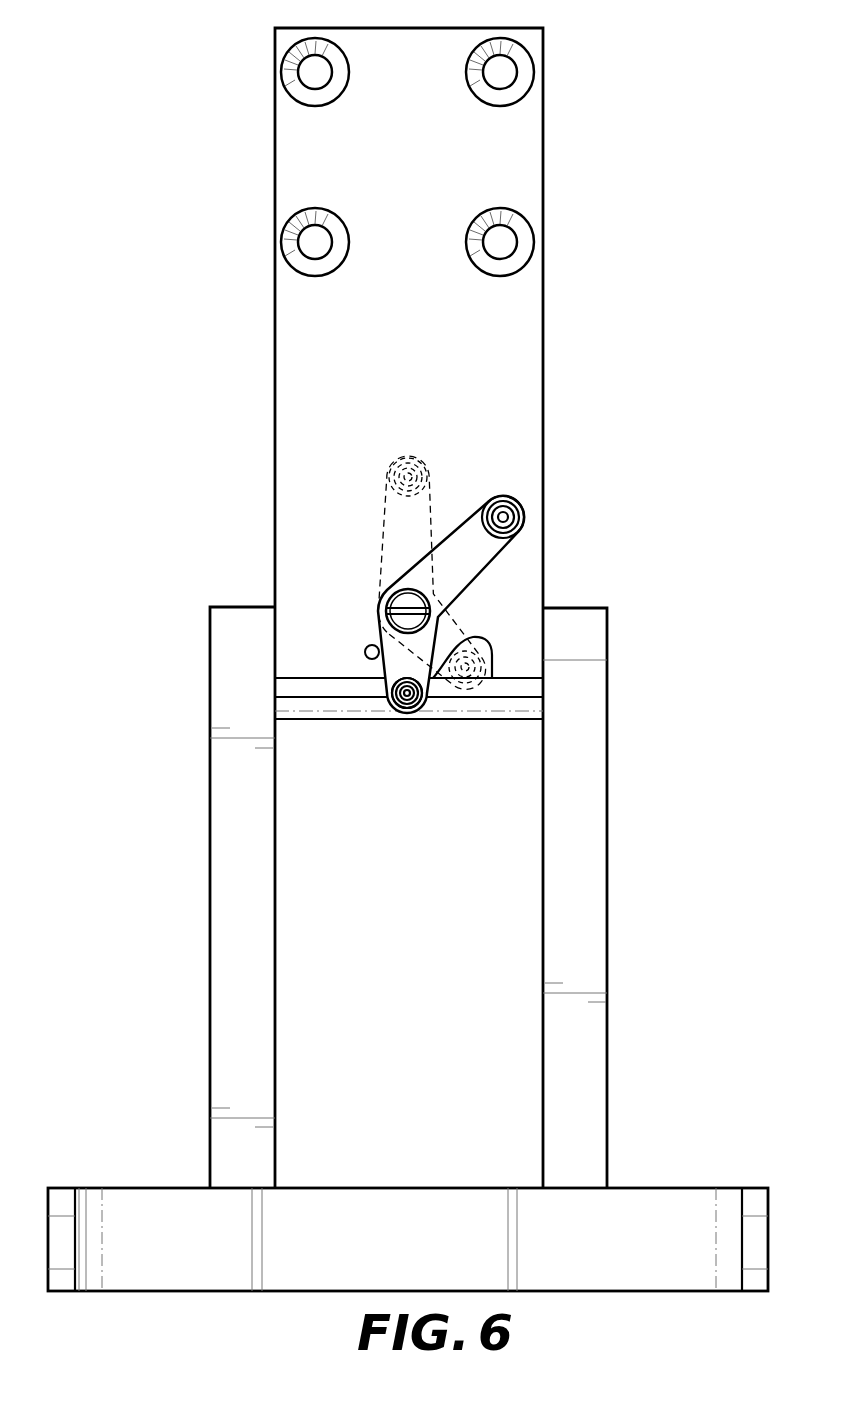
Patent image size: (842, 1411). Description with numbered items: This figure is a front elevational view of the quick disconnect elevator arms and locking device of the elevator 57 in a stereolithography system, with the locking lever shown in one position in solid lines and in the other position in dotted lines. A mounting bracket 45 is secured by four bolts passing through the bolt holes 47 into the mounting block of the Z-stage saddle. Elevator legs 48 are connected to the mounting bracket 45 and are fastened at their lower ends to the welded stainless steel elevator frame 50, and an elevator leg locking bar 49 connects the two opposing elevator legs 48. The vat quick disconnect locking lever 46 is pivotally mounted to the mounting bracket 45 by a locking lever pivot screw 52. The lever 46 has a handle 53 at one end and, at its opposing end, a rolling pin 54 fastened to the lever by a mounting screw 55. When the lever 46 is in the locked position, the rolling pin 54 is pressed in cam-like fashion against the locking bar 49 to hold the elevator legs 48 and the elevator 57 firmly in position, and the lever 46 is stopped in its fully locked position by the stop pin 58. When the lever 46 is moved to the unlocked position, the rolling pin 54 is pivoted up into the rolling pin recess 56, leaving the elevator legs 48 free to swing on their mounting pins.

The mounting bracket 45 is at (409, 608).
The vat quick disconnect locking lever 46 is at (488, 575).
The bolt holes 47 is at (498, 107).
The elevator legs 48 is at (208, 897).
The elevator leg locking bar 49 is at (313, 720).
The elevator frame 50 is at (408, 1239).
The locking lever pivot screw 52 is at (385, 606).
The handle 53 is at (524, 517).
The rolling pin 54 is at (407, 708).
The mounting screw 55 is at (420, 695).
The rolling pin recess 56 is at (475, 637).
The elevator 57 is at (155, 1136).
The stop pin 58 is at (365, 652).